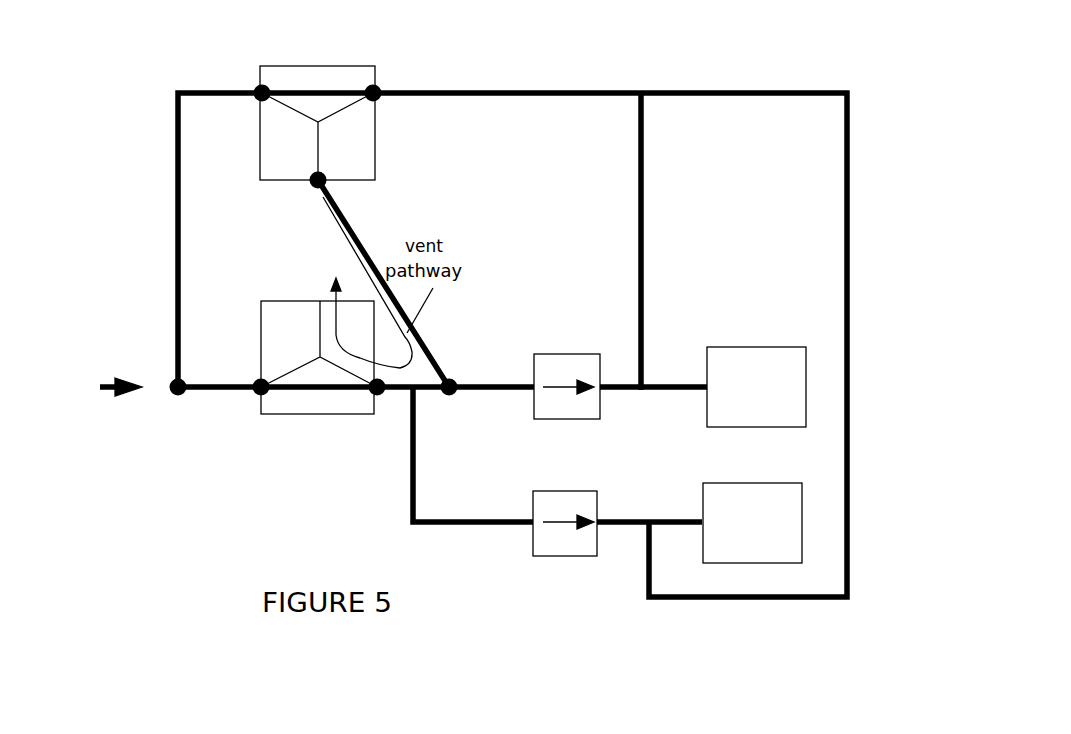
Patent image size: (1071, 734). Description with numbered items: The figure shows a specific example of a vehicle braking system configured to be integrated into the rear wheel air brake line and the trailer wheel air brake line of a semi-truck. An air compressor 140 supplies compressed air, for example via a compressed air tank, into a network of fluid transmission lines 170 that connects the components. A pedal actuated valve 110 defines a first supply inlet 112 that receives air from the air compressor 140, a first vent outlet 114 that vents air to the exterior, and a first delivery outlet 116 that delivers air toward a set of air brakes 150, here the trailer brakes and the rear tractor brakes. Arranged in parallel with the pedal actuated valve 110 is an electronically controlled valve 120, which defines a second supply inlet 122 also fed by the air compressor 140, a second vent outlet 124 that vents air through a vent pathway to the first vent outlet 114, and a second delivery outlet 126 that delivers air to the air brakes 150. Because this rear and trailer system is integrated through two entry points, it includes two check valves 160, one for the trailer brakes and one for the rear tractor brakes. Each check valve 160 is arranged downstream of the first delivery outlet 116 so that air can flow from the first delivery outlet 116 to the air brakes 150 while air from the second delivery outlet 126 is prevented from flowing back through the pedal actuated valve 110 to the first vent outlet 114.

The pedal actuated valve 110 is at (315, 413).
The first supply inlet 112 is at (258, 389).
The first vent outlet 114 is at (320, 301).
The first delivery outlet 116 is at (380, 413).
The electronically controlled valve 120 is at (307, 65).
The second supply inlet 122 is at (257, 87).
The second vent outlet 124 is at (312, 190).
The second delivery outlet 126 is at (423, 61).
The air compressor 140 is at (74, 363).
The air brakes 150 is at (805, 388).
The check valve 160 is at (583, 556).
The fluid transmission lines 170 is at (175, 325).